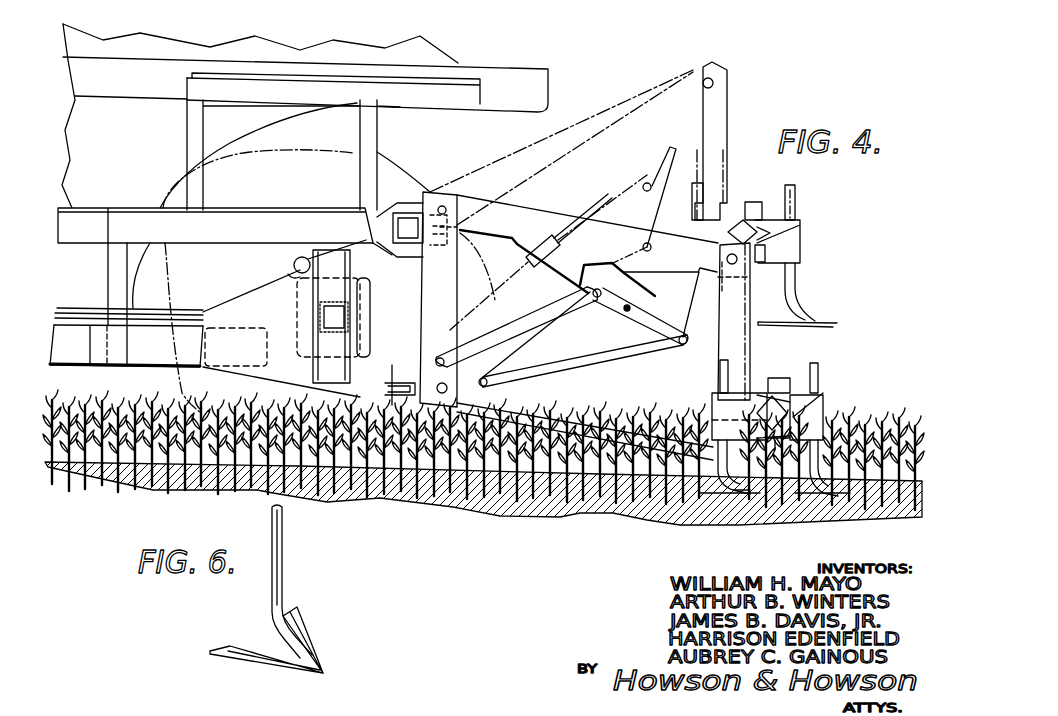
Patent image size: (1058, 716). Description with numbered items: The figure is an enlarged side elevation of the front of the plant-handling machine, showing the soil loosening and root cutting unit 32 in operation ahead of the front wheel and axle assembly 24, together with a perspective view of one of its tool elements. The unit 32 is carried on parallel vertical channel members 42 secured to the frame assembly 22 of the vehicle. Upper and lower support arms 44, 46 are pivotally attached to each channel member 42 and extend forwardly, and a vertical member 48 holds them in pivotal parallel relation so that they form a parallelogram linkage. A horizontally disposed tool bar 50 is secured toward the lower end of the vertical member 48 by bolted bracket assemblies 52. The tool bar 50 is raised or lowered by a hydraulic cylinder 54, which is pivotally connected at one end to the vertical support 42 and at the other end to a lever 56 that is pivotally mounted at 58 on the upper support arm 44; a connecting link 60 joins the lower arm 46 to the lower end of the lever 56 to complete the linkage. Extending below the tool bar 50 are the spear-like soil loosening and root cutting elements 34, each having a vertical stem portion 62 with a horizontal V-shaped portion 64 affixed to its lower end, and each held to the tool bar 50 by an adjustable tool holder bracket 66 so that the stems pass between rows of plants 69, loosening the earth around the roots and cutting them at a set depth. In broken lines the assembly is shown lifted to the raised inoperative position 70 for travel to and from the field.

In FIG. 4, the frame assembly 22 is at (270, 220).
In FIG. 4, the front wheel and axle assembly 24 is at (405, 175).
In FIG. 4, the soil loosening and root cutting unit 32 is at (559, 204).
In FIG. 4, the soil loosening and root cutting element 34 is at (838, 323).
In FIG. 6, the soil loosening and root cutting element 34 is at (318, 655).
In FIG. 4, the vertical channel member 42 is at (425, 300).
In FIG. 4, the upper support arm 44 is at (674, 282).
In FIG. 4, the lower support arm 46 is at (646, 412).
In FIG. 4, the vertical member 48 is at (745, 348).
In FIG. 4, the tool bar 50 is at (736, 215).
In FIG. 4, the bolted bracket assembly 52 is at (803, 246).
In FIG. 4, the hydraulic cylinder 54 is at (520, 320).
In FIG. 4, the lever 56 is at (613, 264).
In FIG. 4, the pivot 58 is at (648, 183).
In FIG. 4, the connecting link 60 is at (647, 266).
In FIG. 4, the vertical stem portion 62 is at (722, 372).
In FIG. 6, the vertical stem portion 62 is at (283, 552).
In FIG. 4, the horizontal V-shaped portion 64 is at (718, 518).
In FIG. 6, the horizontal V-shaped portion 64 is at (270, 652).
In FIG. 4, the adjustable tool holder bracket 66 is at (790, 433).
In FIG. 4, the plants 69 is at (200, 418).
In FIG. 4, the raised inoperative position 70 is at (607, 110).